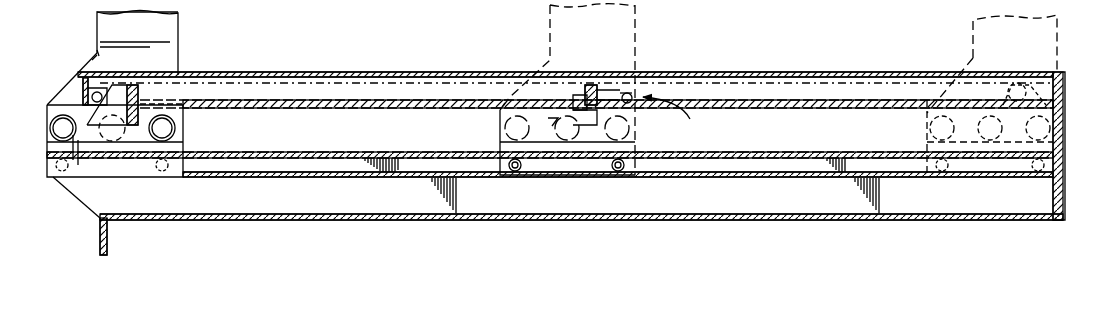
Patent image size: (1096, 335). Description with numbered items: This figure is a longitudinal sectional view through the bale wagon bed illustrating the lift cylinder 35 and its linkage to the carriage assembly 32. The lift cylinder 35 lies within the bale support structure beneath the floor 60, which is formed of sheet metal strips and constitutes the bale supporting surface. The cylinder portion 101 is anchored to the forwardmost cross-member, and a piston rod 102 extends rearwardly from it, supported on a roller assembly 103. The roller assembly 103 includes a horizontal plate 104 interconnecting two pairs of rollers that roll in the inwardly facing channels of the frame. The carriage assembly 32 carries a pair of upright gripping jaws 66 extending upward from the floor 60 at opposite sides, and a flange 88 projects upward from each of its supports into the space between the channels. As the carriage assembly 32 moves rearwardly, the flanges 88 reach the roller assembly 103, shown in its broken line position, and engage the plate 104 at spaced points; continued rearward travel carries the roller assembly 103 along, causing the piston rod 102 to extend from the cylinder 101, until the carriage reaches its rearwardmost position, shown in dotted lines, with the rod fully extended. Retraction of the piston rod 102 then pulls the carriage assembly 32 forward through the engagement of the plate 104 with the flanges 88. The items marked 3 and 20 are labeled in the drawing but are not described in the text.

The drawer slide assembly 3 is at (52, 64).
The drawer 20 is at (112, 14).
The carriage assembly 32 is at (42, 143).
The lift cylinder 35 is at (358, 76).
The floor 60 is at (808, 75).
The gripping jaws 66 is at (155, 28).
The flange 88 is at (132, 100).
The cylinder portion 101 is at (245, 95).
The piston rod 102 is at (592, 83).
The roller assembly 103 is at (679, 119).
The horizontal plate 104 is at (620, 93).